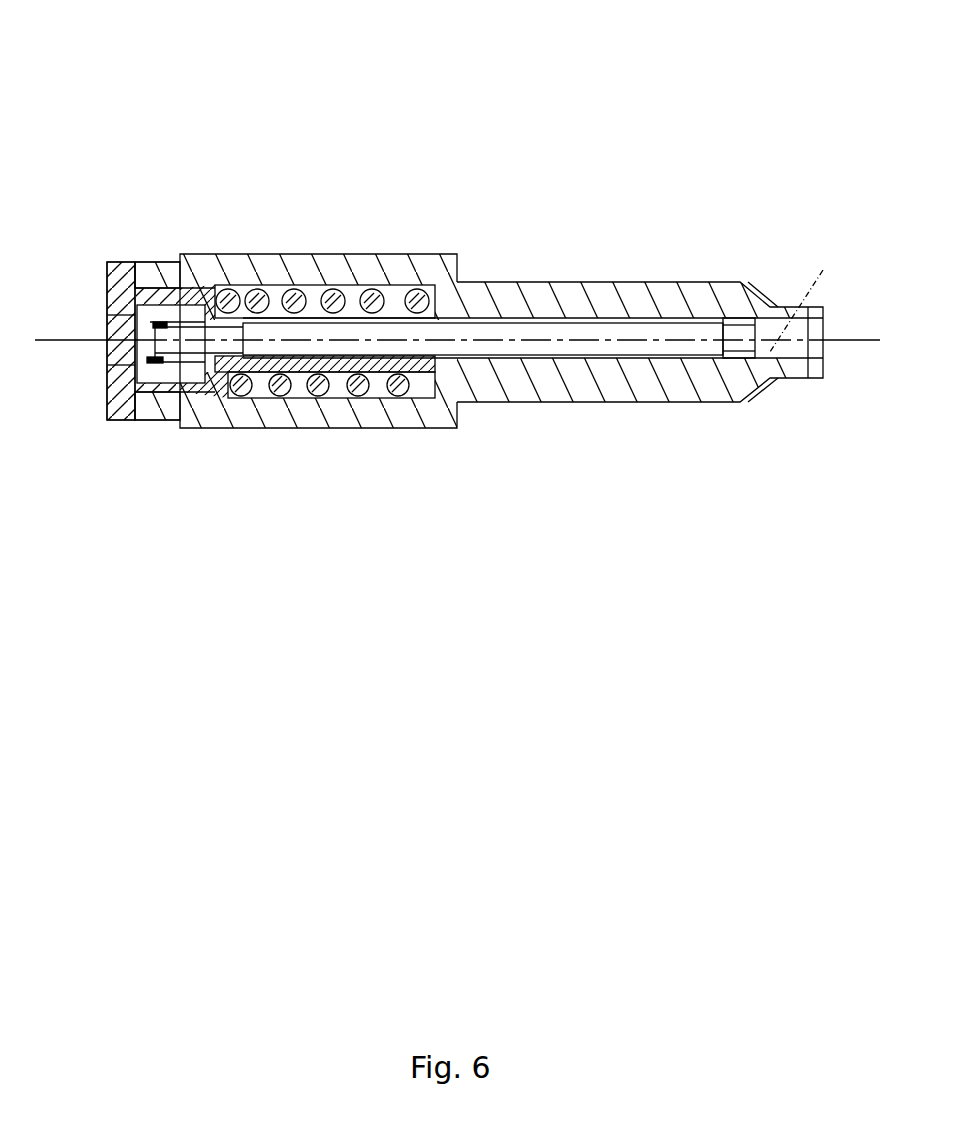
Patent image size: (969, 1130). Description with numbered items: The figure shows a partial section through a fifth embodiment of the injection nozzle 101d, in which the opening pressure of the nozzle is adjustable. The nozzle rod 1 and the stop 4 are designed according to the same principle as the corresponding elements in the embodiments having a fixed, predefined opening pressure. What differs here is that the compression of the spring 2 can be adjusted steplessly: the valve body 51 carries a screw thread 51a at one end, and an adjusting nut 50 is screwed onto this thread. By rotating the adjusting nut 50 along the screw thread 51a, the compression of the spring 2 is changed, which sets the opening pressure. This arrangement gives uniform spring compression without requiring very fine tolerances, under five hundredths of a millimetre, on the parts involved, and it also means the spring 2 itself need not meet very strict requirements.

The injection nozzle 101d is at (250, 183).
The nozzle rod 1 is at (553, 293).
The spring 2 is at (397, 392).
The stop 4 is at (120, 266).
The adjusting nut 50 is at (172, 385).
The valve body 51 is at (402, 330).
The screw thread 51a is at (348, 315).